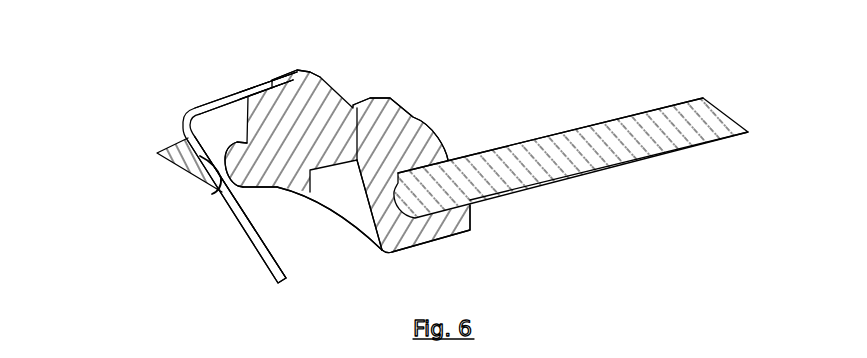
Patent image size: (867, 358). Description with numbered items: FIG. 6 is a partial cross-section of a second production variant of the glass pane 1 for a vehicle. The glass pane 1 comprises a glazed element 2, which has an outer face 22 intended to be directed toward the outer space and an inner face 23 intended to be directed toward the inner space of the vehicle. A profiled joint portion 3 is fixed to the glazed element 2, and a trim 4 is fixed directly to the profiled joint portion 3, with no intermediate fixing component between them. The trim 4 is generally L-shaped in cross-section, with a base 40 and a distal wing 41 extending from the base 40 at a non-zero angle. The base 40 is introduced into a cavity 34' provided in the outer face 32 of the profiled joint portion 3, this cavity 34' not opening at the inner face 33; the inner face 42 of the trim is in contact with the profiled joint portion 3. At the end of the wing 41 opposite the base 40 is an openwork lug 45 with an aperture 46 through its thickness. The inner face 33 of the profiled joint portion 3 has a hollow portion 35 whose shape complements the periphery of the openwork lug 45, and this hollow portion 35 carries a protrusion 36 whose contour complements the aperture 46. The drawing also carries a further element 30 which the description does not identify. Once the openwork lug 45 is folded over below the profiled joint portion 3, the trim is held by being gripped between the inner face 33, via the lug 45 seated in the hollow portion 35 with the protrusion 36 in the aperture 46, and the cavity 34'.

The glass pane 1 is at (286, 47).
The glazed element 2 is at (532, 173).
The profiled joint portion 3 is at (308, 146).
The trim 4 is at (207, 107).
The outer face 22 is at (597, 125).
The inner face 23 is at (593, 175).
The base portion of clamp body 30 is at (212, 194).
The outer face 32 is at (363, 100).
The inner face 33 is at (457, 235).
The cavity 34' is at (310, 66).
The hollow portion 35 is at (358, 208).
The protrusion 36 is at (282, 188).
The base 40 is at (227, 100).
The wing 41 is at (205, 157).
The inner face 42 is at (257, 90).
The openwork lug 45 is at (273, 265).
The aperture 46 is at (258, 231).